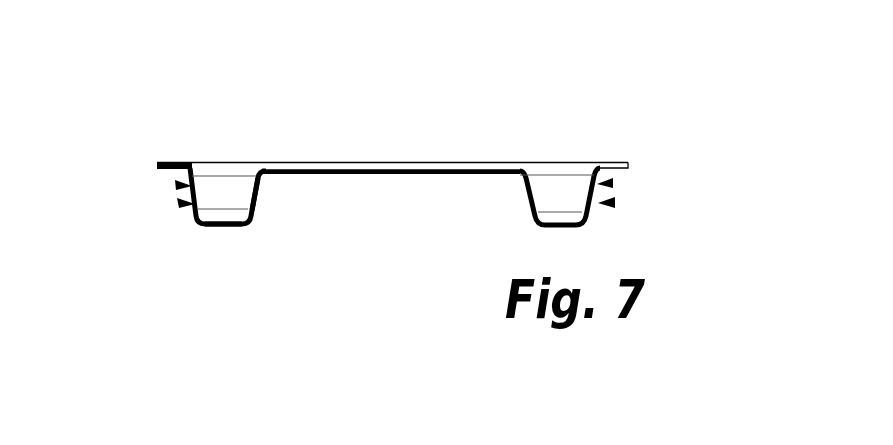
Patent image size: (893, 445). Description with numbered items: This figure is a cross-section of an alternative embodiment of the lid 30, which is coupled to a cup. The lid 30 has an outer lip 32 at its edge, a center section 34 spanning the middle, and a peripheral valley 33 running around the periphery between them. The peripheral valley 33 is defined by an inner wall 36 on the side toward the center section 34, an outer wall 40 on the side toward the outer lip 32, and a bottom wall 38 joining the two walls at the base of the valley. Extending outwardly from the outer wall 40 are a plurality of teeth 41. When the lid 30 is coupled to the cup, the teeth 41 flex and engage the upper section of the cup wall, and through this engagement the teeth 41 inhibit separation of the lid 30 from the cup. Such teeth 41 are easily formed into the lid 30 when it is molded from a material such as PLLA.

The lid 30 is at (462, 208).
The outer lip 32 is at (157, 163).
The peripheral valley 33 is at (552, 172).
The center section 34 is at (322, 177).
The inner wall 36 is at (258, 200).
The bottom wall 38 is at (231, 225).
The outer wall 40 is at (197, 213).
The teeth 41 is at (185, 198).